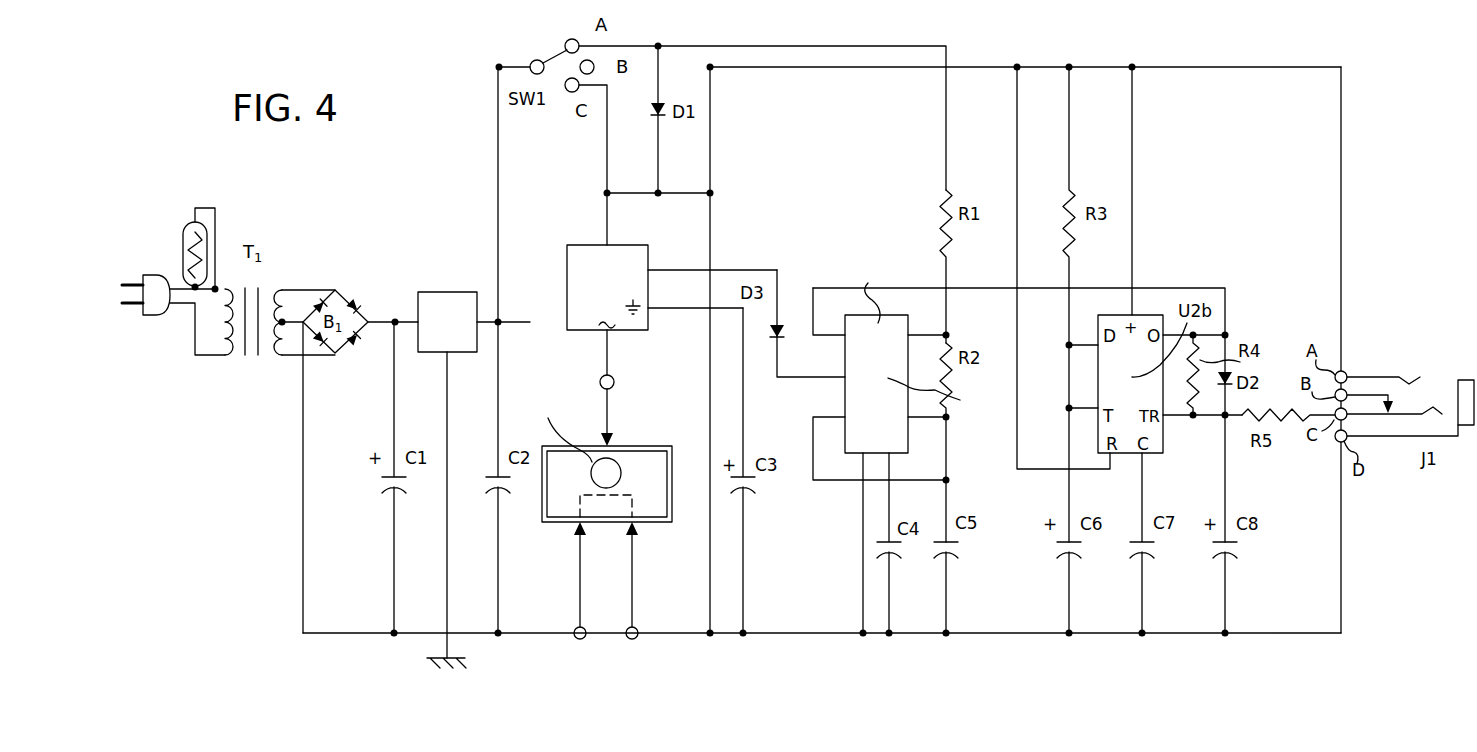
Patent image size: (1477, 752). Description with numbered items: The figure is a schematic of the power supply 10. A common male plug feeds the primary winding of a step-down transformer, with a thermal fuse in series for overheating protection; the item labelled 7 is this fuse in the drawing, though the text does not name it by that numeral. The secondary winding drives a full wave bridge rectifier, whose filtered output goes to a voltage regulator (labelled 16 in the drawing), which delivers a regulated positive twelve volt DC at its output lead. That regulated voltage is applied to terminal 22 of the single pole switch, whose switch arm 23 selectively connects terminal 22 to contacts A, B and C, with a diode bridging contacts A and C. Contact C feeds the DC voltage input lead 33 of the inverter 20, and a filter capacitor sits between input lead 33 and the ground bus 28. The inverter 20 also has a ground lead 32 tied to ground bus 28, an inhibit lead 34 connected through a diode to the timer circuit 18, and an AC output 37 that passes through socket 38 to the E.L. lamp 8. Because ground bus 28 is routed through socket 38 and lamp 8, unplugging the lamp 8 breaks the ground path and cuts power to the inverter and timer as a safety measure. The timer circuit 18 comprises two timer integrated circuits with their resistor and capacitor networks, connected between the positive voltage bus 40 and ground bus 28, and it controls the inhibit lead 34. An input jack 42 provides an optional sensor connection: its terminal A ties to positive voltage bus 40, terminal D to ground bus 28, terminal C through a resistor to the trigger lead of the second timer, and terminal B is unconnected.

The fuse 7 is at (182, 243).
The E.L. lamp 8 is at (597, 449).
The power supply 10 is at (1362, 194).
The voltage regulator U1 16 is at (444, 292).
The timer circuit 18 is at (892, 248).
The inverter 20 is at (566, 298).
The terminal of switch SW1 22 is at (531, 62).
The switch arm 23 is at (554, 50).
The ground bus 28 is at (1275, 636).
The ground lead 32 is at (655, 314).
The DC voltage input lead 33 is at (610, 244).
The inhibit lead 34 is at (650, 268).
The AC output 37 is at (609, 334).
The socket 38 is at (614, 383).
The positive voltage bus 40 is at (1199, 67).
The input jack 42 is at (1466, 380).